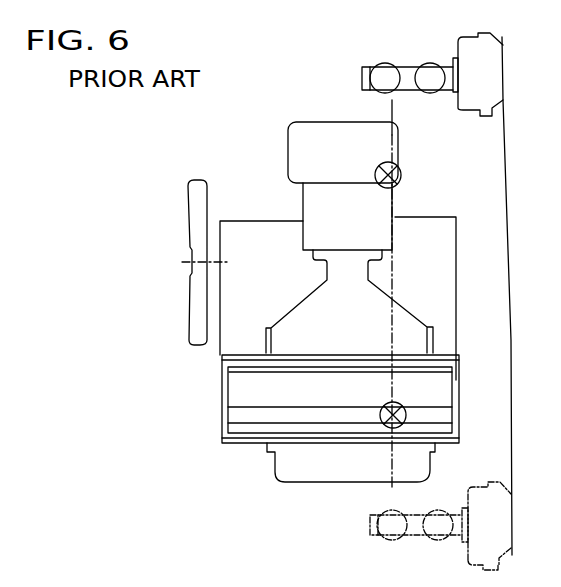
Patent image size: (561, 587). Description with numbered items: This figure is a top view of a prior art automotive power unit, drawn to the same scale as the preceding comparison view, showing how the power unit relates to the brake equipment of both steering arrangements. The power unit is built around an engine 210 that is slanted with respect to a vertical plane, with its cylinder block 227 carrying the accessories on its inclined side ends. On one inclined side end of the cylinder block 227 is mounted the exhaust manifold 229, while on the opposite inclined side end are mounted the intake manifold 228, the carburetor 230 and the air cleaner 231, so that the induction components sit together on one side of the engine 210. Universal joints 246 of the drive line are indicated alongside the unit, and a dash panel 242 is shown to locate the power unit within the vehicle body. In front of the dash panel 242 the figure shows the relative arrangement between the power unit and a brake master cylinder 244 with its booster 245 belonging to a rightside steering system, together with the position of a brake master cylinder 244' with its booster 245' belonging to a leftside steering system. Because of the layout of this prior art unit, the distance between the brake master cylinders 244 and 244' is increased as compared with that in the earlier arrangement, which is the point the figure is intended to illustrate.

The engine 210 is at (217, 351).
The cylinder block 227 is at (462, 378).
The intake manifold 228 is at (405, 313).
The exhaust manifold 229 is at (430, 464).
The carburetor 230 is at (392, 201).
The air cleaner 231 is at (400, 126).
The dash panel 242 is at (400, 165).
The brake master cylinder 244 is at (410, 63).
The booster 245 is at (501, 68).
The universal joints 246 is at (517, 199).
The brake master cylinder 244' is at (419, 542).
The booster 245' is at (514, 529).